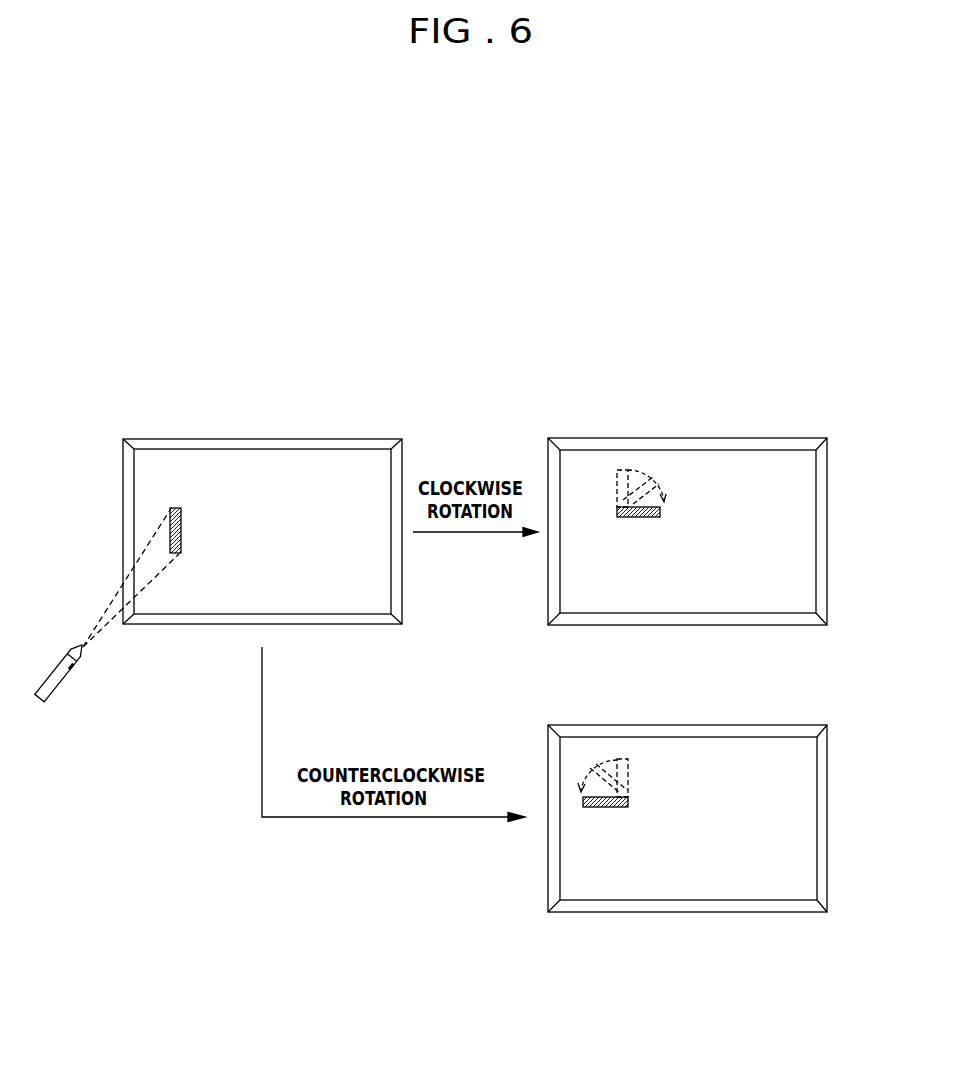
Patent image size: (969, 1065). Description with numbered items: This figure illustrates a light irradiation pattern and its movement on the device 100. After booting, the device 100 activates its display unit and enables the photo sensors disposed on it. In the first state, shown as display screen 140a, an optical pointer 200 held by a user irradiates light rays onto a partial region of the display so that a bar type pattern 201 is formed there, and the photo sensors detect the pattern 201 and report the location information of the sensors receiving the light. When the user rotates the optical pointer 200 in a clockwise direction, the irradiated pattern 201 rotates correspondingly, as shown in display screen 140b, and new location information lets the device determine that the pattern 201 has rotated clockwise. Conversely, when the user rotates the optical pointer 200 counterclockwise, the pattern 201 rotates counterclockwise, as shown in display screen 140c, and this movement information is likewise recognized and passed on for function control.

The device 100 is at (287, 438).
The display screen 140a is at (360, 578).
The display screen 140b is at (782, 579).
The display screen 140c is at (782, 864).
The optical pointer 200 is at (60, 678).
The bar type pattern 201 is at (183, 527).